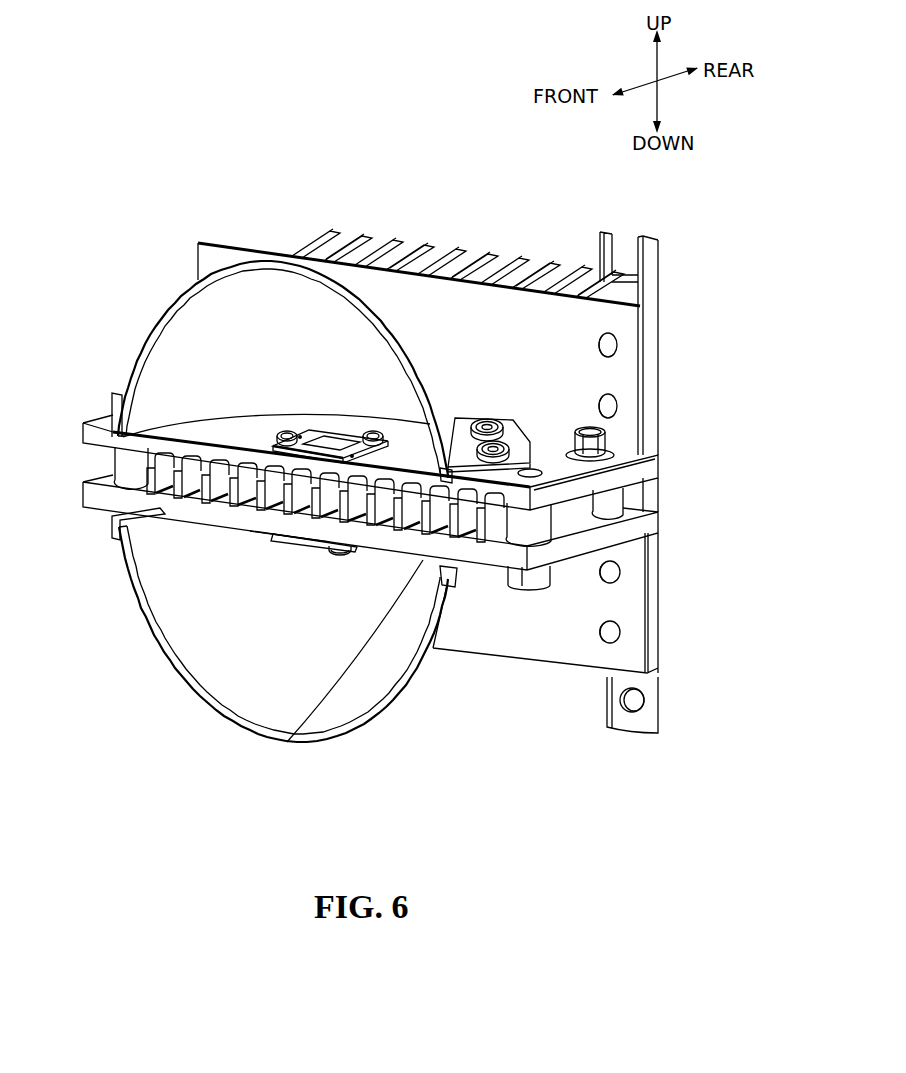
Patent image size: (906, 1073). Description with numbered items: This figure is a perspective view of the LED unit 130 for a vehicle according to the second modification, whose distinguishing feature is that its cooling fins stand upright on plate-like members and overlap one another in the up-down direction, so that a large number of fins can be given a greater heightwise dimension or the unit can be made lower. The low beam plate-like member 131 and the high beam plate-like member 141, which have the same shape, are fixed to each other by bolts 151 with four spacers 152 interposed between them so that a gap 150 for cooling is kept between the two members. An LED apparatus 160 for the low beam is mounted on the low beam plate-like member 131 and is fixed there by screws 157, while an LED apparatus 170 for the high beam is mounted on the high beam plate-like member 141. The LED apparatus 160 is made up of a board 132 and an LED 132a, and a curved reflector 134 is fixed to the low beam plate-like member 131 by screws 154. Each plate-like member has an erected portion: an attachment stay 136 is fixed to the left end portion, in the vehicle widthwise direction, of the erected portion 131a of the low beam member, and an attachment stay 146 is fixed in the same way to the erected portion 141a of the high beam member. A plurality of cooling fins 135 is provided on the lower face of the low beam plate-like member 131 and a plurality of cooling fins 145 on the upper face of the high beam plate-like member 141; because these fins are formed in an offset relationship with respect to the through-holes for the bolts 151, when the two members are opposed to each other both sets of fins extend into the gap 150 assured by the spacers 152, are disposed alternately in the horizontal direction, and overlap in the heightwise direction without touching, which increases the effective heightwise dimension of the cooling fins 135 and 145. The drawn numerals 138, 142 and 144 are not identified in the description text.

The LED unit 130 is at (243, 218).
The low beam plate-like member 131 is at (228, 428).
The erected portion 131a is at (622, 365).
The board 132 is at (347, 432).
The LED 132a is at (306, 424).
The curved reflector 134 is at (165, 305).
The cooling fins 135 is at (421, 503).
The attachment stay 136 is at (647, 272).
The heat radiating fins 138 is at (318, 241).
The high beam plate-like member 141 is at (200, 516).
The erected portion 141a is at (623, 625).
The mounting plate 142 is at (307, 545).
The lower cover left portion 144 is at (120, 562).
The cooling fins 145 is at (432, 648).
The attachment stay 146 is at (647, 700).
The gap 150 is at (260, 514).
The bolts 151 is at (113, 402).
The spacers 152 is at (123, 462).
The screws 154 is at (533, 392).
The screws 157 is at (283, 432).
The LED apparatus 160 is at (231, 425).
The LED apparatus 170 is at (280, 544).